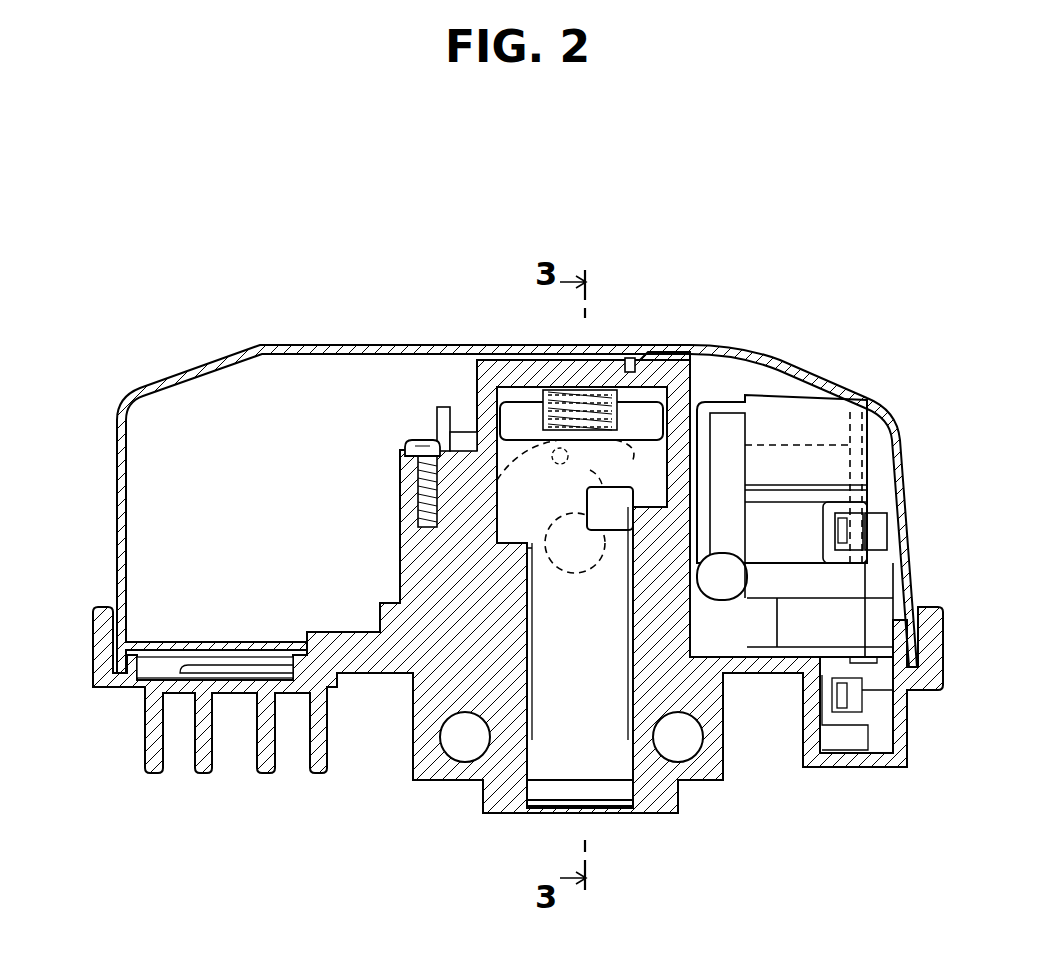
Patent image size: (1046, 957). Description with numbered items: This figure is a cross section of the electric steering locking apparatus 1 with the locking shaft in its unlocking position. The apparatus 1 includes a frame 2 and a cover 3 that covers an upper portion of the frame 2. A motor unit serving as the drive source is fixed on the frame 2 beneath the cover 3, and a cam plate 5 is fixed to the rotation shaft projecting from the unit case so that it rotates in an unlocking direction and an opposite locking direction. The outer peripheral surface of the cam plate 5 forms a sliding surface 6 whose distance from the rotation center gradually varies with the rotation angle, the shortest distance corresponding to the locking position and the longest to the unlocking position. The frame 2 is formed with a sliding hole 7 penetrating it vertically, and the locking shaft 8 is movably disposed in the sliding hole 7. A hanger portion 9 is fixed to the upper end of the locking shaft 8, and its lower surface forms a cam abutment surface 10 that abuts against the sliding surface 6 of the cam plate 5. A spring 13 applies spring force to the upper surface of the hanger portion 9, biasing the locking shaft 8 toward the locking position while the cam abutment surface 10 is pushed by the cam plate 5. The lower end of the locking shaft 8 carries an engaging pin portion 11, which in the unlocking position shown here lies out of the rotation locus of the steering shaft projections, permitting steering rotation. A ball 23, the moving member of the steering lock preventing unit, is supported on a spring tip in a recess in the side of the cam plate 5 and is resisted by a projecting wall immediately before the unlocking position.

The electric steering locking apparatus 1 is at (160, 332).
The frame 2 is at (735, 710).
The cover 3 is at (805, 375).
The cam plate 5 is at (592, 580).
The sliding surface 6 is at (473, 445).
The sliding hole 7 is at (483, 790).
The locking shaft 8 is at (617, 742).
The hanger portion 9 is at (515, 413).
The cam abutment surface 10 is at (680, 357).
The engaging pin portion 11 is at (597, 790).
The spring 13 is at (630, 356).
The ball 23 is at (405, 460).